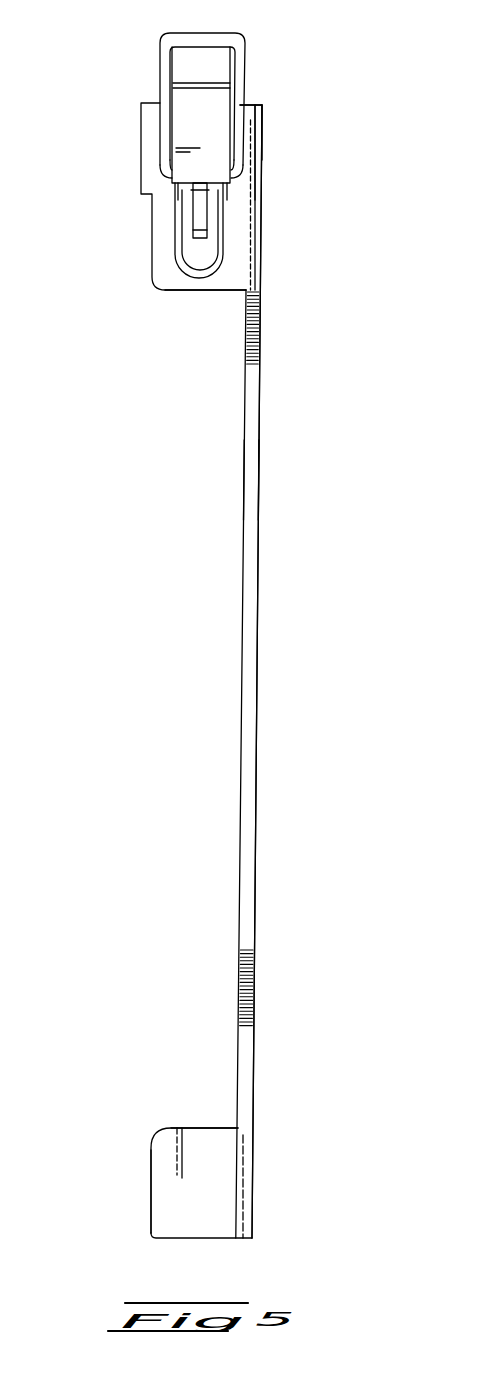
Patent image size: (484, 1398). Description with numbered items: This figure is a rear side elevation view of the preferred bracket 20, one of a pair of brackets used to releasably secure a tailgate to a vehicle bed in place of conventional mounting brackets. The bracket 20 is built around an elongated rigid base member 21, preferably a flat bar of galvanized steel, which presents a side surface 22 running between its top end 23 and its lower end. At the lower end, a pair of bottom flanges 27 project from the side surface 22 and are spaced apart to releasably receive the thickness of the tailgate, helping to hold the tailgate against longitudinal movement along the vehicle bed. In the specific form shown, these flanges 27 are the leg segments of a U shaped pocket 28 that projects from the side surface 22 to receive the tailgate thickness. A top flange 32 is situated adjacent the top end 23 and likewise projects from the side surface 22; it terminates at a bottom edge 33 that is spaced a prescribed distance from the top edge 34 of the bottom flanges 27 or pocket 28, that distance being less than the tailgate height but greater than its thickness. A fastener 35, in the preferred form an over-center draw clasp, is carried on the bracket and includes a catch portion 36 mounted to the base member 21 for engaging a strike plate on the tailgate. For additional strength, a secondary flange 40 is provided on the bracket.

The bracket 20 is at (278, 753).
The base member 21 is at (247, 632).
The side surface 22 is at (244, 460).
The top end 23 is at (251, 103).
The bottom flange 27 is at (210, 1178).
The U shaped pocket 28 is at (151, 1188).
The top flange 32 is at (237, 208).
The bottom edge 33 is at (193, 292).
The top edge 34 is at (204, 1128).
The fastener 35 is at (256, 143).
The catch portion 36 is at (165, 67).
The secondary flange 40 is at (140, 148).